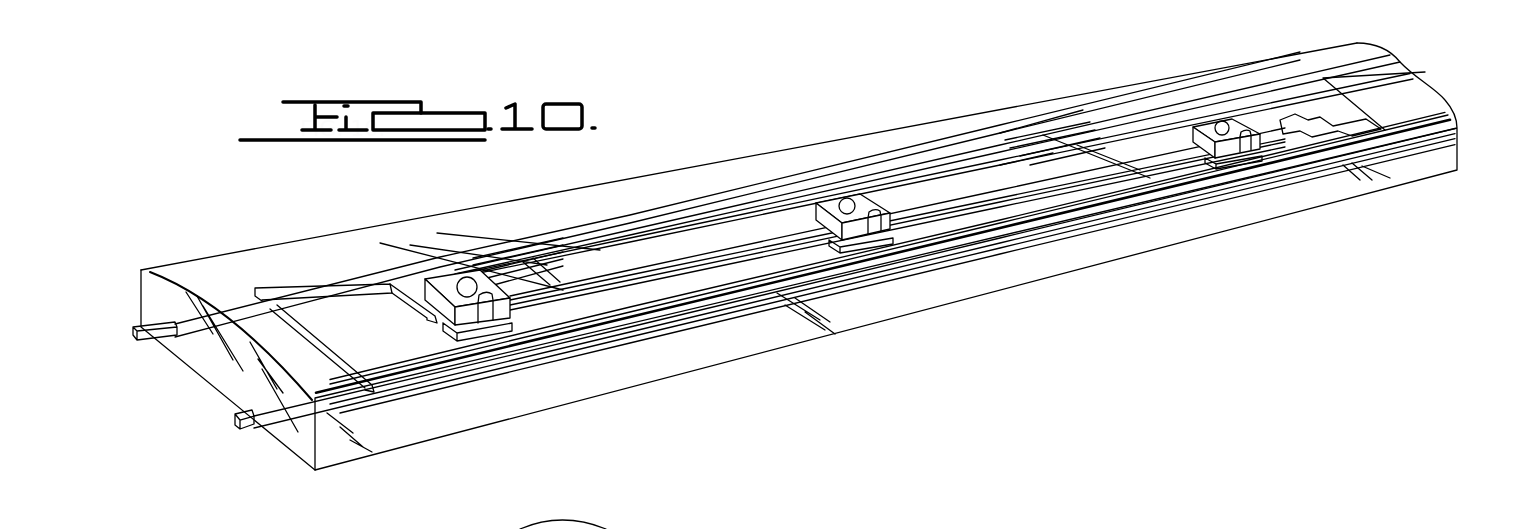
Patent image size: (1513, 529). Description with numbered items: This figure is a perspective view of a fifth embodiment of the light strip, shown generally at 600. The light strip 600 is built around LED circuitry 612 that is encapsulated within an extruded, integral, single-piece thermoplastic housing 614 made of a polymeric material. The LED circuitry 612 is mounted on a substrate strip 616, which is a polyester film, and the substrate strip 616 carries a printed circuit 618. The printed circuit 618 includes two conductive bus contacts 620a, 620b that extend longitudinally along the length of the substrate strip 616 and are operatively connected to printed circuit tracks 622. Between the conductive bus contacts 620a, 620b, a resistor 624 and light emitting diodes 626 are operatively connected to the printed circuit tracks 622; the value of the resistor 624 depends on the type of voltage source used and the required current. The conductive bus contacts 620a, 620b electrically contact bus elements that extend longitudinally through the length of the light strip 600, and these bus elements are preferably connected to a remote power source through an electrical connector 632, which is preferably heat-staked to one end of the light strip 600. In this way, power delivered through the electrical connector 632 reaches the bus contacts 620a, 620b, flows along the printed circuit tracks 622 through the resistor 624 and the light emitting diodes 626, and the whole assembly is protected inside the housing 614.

The light strip 600 is at (1394, 222).
The LED circuitry 612 is at (790, 200).
The housing 614 is at (1005, 118).
The substrate strip 616 is at (760, 267).
The printed circuit 618 is at (600, 307).
The conductive bus contact 620a is at (290, 297).
The conductive bus contact 620b is at (432, 368).
The printed circuit tracks 622 is at (705, 250).
The resistor 624 is at (1317, 120).
The light emitting diodes 626 is at (440, 285).
The electrical connector 632 is at (200, 412).